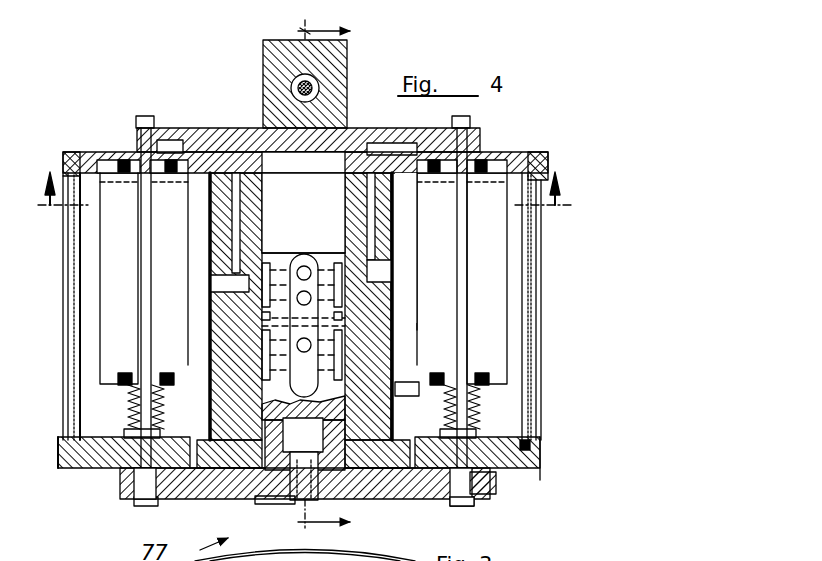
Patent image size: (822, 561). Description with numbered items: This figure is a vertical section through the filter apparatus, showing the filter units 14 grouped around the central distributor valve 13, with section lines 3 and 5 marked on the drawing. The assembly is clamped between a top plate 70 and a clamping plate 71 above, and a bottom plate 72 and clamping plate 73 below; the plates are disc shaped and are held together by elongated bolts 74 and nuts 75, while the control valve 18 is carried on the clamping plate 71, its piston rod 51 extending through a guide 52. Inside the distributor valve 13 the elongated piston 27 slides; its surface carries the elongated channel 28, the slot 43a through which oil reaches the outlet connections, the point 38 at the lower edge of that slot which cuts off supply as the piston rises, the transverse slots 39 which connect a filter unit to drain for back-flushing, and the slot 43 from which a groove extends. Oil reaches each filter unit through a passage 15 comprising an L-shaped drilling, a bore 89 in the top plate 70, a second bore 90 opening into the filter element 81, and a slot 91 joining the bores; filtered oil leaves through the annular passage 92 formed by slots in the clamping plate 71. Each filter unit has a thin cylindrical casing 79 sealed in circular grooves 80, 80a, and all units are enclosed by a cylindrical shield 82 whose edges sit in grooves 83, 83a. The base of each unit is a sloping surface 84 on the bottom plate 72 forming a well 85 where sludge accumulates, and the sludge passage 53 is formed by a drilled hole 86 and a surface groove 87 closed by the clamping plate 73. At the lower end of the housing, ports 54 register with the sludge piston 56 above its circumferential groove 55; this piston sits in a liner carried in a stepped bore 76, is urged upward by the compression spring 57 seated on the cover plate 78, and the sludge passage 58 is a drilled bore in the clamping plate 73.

The section line 3- 3 is at (303, 188).
The section line 5- 5 is at (333, 282).
The distributor valve 13 is at (228, 229).
The filter unit 14 is at (70, 302).
The passage 15 is at (372, 264).
The control valve 18 is at (372, 74).
The piston 27 is at (262, 256).
The elongated channel 28 is at (312, 346).
The point 38 is at (347, 316).
The transverse slot 39 is at (262, 318).
The slot 43 is at (345, 378).
The slot 43a is at (338, 262).
The piston rod 51 is at (296, 84).
The guide 52 is at (299, 92).
The sludge passage 53 is at (240, 400).
The port 54 is at (302, 500).
The circumferential groove 55 is at (305, 444).
The sludge piston 56 is at (408, 382).
The compression spring 57 is at (356, 468).
The sludge passage 58 is at (484, 486).
The top plate 70 is at (540, 162).
The clamping plate 71 is at (481, 143).
The bottom plate 72 is at (539, 470).
The clamping plate 73 is at (462, 506).
The elongated bolt 74 is at (138, 254).
The nut 75 is at (140, 118).
The stepped bore 76 is at (270, 502).
The cover plate 78 is at (258, 456).
The cylindrical casing 79 is at (528, 314).
The circular groove 80 is at (524, 157).
The circular groove 80a is at (60, 446).
The filter element 81 is at (124, 394).
The cylindrical shield 82 is at (533, 352).
The groove 83 is at (72, 165).
The groove 83a is at (540, 446).
The sloping surface 84 is at (103, 455).
The well 85 is at (190, 438).
The drilled hole 86 is at (130, 470).
The surface groove 87 is at (176, 472).
The bore 89 is at (336, 167).
The second bore 90 is at (402, 175).
The slot 91 is at (392, 145).
The annular passage 92 is at (170, 140).